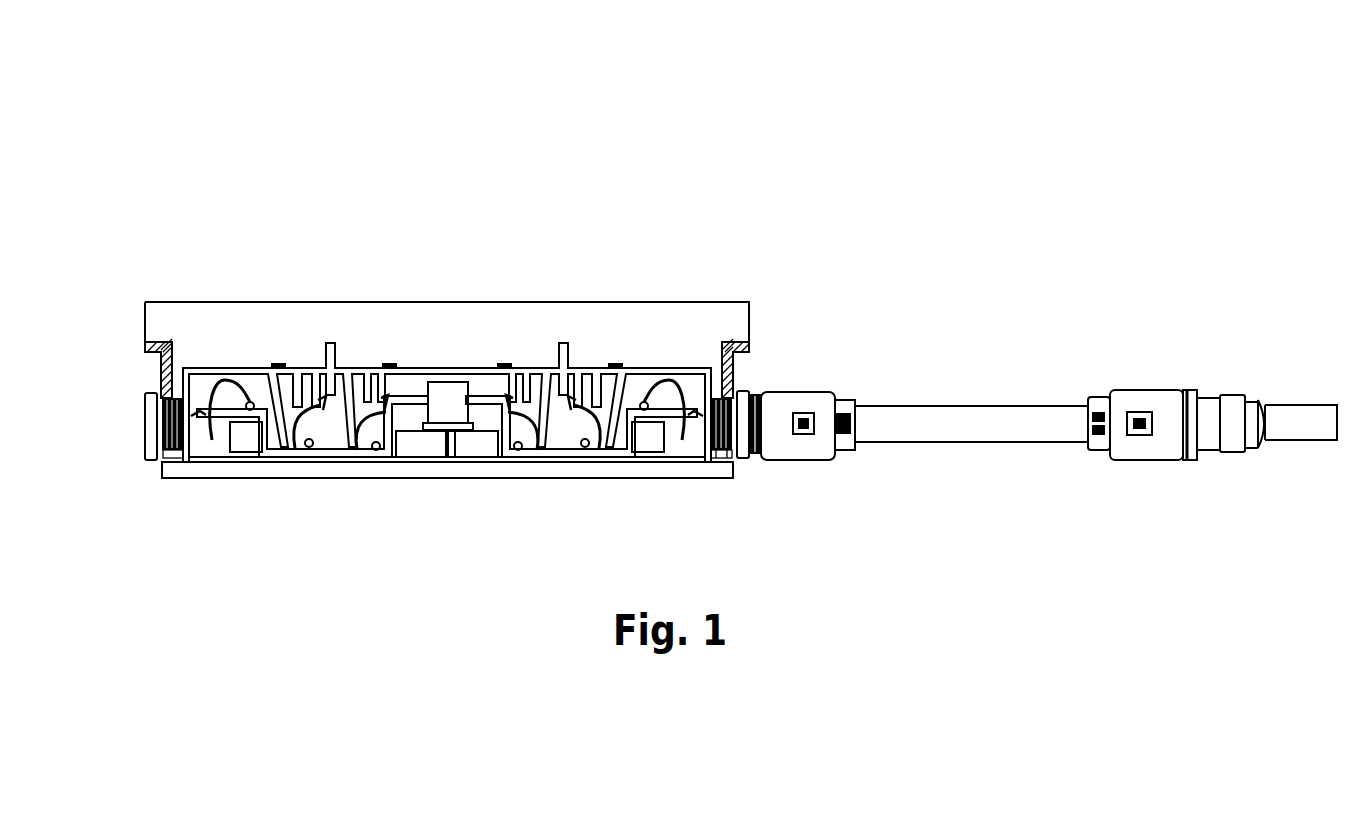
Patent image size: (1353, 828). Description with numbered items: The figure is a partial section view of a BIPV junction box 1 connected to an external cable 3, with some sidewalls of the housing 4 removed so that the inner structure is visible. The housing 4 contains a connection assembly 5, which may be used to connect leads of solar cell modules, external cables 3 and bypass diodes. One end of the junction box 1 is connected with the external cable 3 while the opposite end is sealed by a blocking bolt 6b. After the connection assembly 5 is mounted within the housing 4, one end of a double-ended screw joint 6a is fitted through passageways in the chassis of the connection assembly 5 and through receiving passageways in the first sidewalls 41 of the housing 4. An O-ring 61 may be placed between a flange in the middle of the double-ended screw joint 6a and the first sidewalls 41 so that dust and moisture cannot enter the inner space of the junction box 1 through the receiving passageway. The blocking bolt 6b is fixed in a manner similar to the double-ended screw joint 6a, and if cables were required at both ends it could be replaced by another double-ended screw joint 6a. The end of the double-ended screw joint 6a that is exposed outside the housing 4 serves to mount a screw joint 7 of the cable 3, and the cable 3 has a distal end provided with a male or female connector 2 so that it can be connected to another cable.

The BIPV junction box 1 is at (608, 280).
The male or female connector 2 is at (1162, 398).
The external cable 3 is at (948, 410).
The housing 4 is at (277, 310).
The first sidewalls 41 is at (150, 367).
The connection assembly 5 is at (407, 373).
The double-ended screw joint 6a is at (753, 398).
The blocking bolt 6b is at (145, 413).
The O-ring 61 is at (735, 460).
The screw joint 7 is at (820, 398).